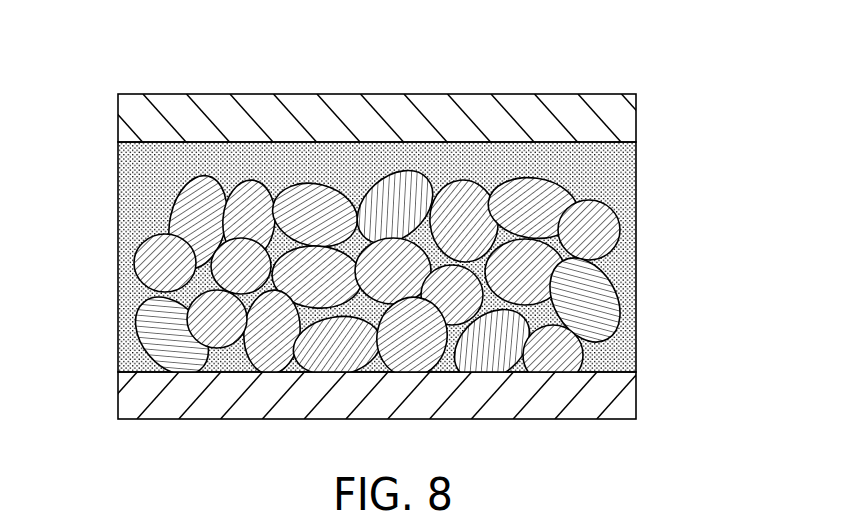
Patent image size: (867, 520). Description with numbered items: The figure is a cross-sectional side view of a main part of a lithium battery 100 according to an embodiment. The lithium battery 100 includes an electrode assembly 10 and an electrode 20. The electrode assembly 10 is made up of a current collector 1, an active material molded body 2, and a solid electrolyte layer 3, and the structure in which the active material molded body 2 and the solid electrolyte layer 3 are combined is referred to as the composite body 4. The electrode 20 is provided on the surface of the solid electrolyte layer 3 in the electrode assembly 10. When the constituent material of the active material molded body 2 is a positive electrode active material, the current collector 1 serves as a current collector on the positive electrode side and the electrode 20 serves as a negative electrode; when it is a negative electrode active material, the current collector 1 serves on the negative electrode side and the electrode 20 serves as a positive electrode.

The lithium battery 100 is at (648, 68).
The electrode 20 is at (636, 118).
The electrode assembly 10 is at (717, 200).
The composite body 4 is at (672, 168).
The solid electrolyte layer 3 is at (618, 193).
The active material molded body 2 is at (616, 277).
The current collector 1 is at (622, 403).